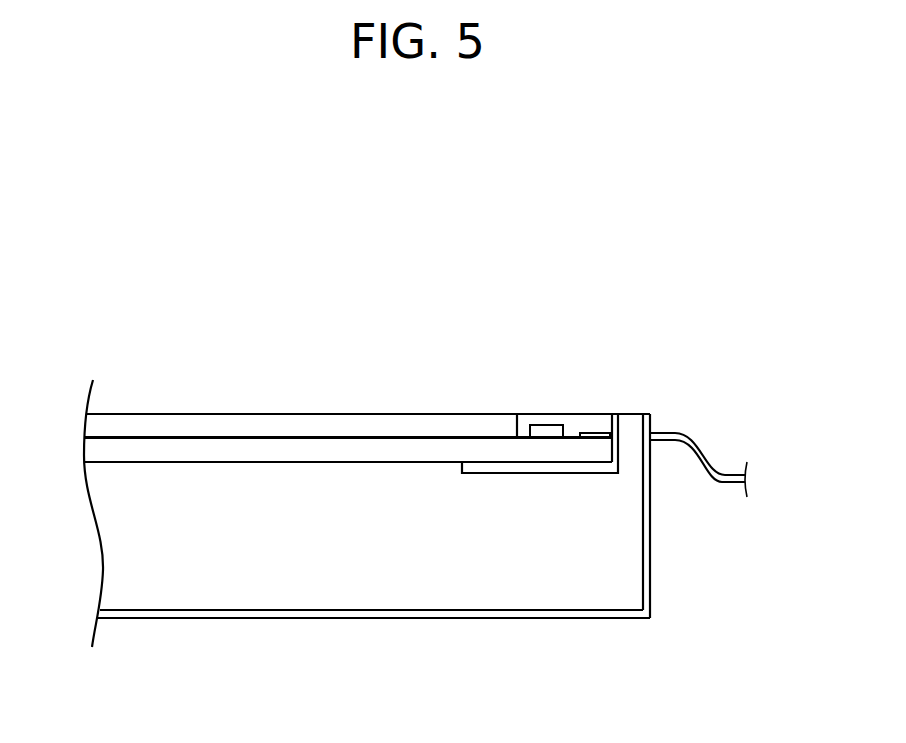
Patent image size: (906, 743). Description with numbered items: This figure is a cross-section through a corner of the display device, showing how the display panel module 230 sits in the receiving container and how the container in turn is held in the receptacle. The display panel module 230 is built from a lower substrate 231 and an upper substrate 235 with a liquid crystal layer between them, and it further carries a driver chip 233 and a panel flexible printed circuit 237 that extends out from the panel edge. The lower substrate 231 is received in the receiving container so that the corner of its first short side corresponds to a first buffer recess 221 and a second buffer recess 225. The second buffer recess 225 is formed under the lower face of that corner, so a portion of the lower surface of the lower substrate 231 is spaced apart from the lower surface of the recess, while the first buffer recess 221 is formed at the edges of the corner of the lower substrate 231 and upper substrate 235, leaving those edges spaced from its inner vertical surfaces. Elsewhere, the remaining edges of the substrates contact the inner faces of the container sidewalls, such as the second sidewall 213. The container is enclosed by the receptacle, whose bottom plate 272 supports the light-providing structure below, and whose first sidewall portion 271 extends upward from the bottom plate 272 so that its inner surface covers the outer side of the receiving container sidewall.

The second sidewall 213 is at (625, 550).
The first buffer recess 221 is at (615, 447).
The second buffer recess 225 is at (563, 470).
The display panel module 230 is at (615, 341).
The lower substrate 231 is at (248, 452).
The driver chip 233 is at (537, 430).
The upper substrate 235 is at (358, 428).
The panel flexible printed circuit 237 is at (593, 437).
The first sidewall portion 271 is at (647, 588).
The bottom plate 272 is at (390, 612).